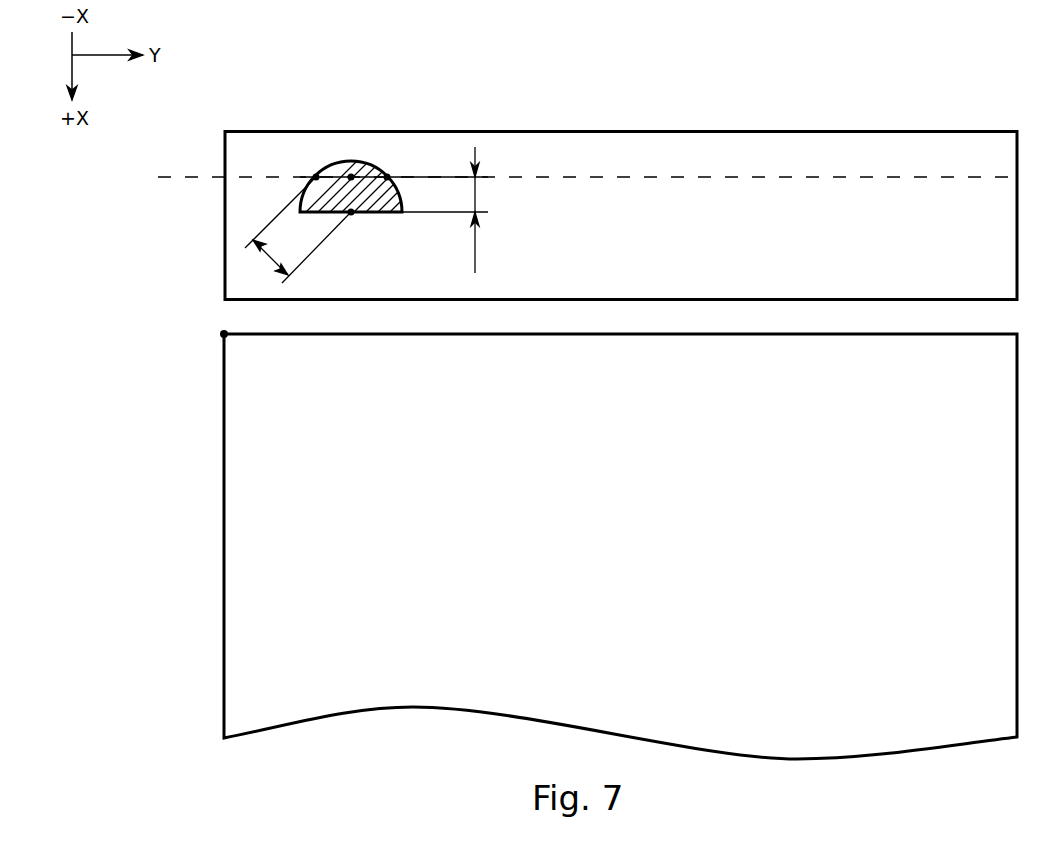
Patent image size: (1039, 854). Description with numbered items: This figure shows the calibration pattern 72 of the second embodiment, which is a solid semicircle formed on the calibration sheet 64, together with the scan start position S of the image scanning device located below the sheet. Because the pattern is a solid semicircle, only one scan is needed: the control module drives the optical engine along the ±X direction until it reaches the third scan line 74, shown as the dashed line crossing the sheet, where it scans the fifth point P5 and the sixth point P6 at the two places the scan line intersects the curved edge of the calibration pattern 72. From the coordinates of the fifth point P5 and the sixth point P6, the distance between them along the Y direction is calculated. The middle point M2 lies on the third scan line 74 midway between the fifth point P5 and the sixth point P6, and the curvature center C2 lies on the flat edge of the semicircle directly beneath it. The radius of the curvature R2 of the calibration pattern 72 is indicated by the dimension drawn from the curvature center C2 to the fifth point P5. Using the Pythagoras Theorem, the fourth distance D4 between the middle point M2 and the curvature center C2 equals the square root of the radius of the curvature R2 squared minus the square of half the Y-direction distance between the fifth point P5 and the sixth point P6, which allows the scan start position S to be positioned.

The calibration sheet 64 is at (872, 132).
The calibration pattern 72 is at (375, 218).
The third scan line 74 is at (573, 178).
The fifth point P5 is at (316, 177).
The sixth point P6 is at (387, 177).
The middle point M2 is at (351, 177).
The curvature center C2 is at (352, 214).
The radius of the curvature R2 is at (298, 230).
The fourth distance D4 is at (394, 210).
The scan start position S is at (609, 536).